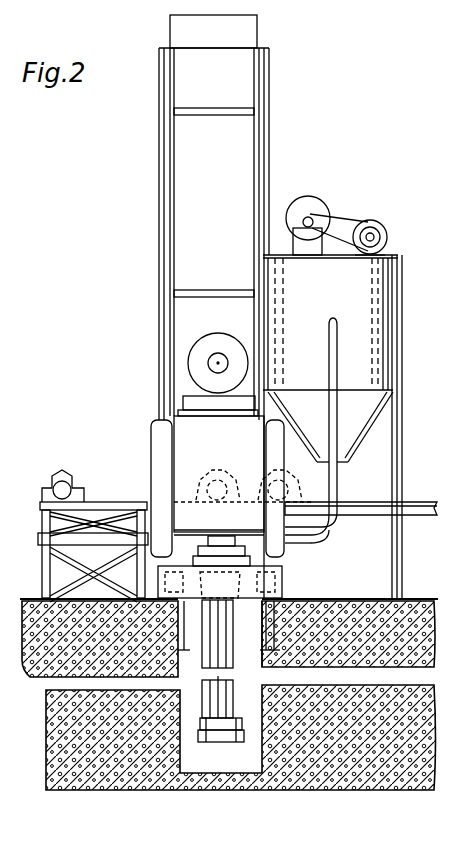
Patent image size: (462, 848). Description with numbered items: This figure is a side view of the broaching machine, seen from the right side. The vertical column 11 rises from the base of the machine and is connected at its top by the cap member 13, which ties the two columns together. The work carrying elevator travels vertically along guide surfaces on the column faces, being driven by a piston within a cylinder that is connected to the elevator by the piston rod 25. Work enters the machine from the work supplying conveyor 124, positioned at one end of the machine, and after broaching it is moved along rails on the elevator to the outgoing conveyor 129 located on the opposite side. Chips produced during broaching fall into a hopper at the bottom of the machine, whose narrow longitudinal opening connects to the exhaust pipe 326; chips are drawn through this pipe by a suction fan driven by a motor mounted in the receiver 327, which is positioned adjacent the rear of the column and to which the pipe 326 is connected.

The vertical column 11 is at (188, 171).
The cap member 13 is at (250, 33).
The piston rod 25 is at (211, 645).
The work supplying conveyor 124 is at (137, 502).
The outgoing conveyor 129 is at (372, 512).
The exhaust pipe 326 is at (323, 545).
The receiver 327 is at (395, 255).